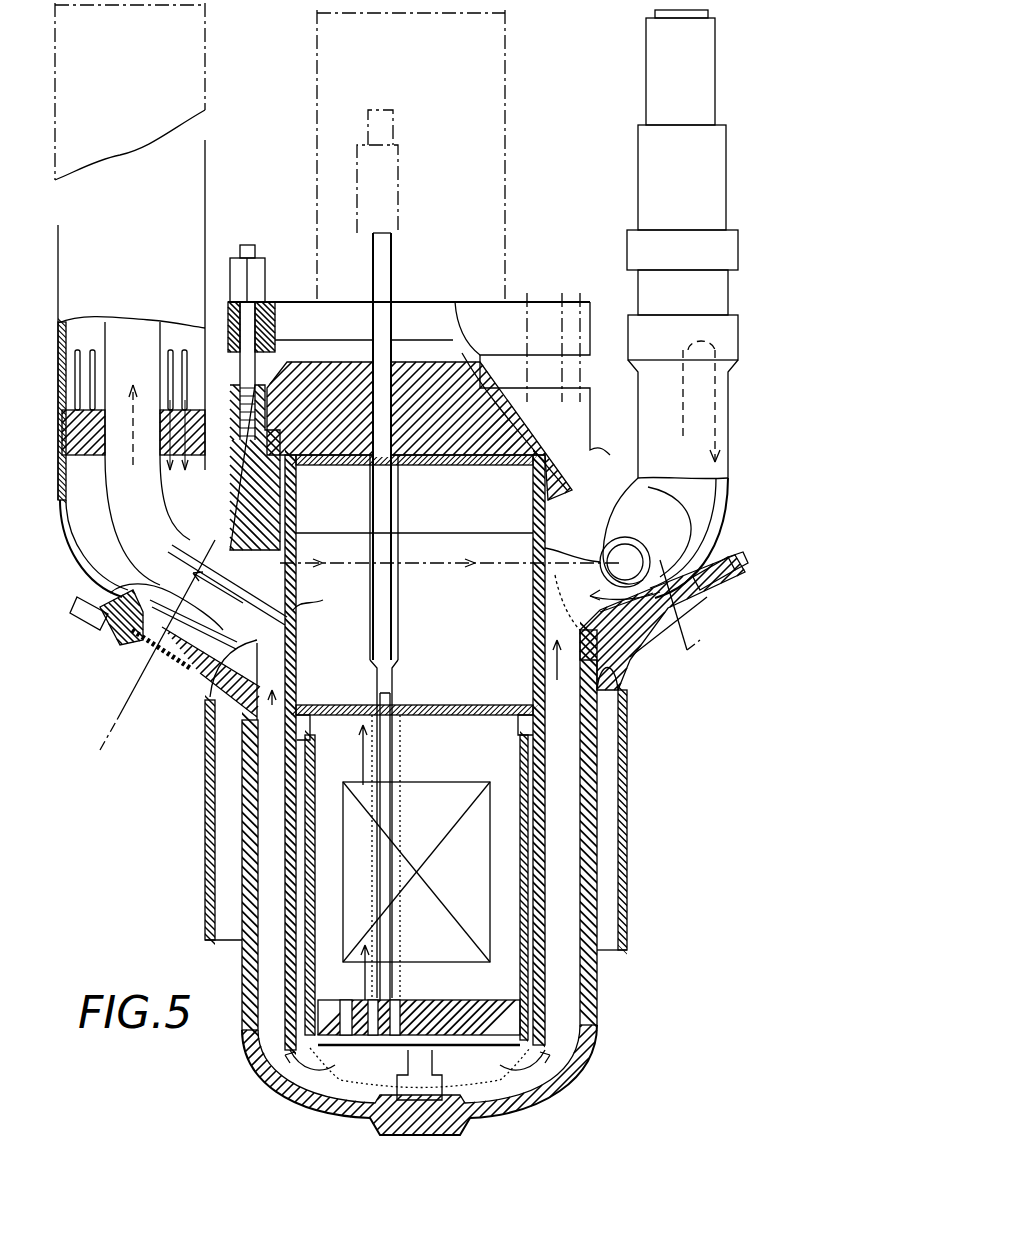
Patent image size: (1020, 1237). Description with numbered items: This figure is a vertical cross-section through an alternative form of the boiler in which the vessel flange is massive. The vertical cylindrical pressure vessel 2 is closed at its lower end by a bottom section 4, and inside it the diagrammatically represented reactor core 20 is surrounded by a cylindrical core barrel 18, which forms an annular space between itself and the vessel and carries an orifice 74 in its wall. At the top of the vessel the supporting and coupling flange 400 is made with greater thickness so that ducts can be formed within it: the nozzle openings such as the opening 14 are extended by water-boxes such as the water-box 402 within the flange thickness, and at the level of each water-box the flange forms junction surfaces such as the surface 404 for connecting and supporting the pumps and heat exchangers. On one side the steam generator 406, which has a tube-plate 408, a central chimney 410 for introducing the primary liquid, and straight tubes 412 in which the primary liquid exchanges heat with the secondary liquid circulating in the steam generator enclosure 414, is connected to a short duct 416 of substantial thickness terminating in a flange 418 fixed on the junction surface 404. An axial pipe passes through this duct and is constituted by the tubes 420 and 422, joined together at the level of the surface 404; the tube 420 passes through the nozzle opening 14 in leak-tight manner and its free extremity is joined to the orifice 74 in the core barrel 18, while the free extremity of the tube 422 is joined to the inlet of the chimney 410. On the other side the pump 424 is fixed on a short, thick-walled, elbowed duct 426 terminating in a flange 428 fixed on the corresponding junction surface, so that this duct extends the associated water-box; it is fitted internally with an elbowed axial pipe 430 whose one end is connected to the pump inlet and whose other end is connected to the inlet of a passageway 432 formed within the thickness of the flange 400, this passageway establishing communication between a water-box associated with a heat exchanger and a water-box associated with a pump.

The pressure vessel 2 is at (590, 893).
The bottom section 4 is at (590, 1060).
The nozzle opening 14 is at (300, 650).
The core barrel 18 is at (298, 682).
The reactor core 20 is at (460, 780).
The orifice 74 is at (324, 606).
The supporting and coupling flange 400 is at (210, 697).
The water-box 402 is at (98, 618).
The junction surface 404 is at (287, 492).
The steam generator 406 is at (210, 72).
The tube-plate 408 is at (103, 440).
The central chimney 410 is at (157, 333).
The straight tubes 412 is at (108, 340).
The steam generator enclosure 414 is at (78, 320).
The short duct 416 is at (72, 527).
The flange 418 is at (147, 637).
The tube 420 is at (280, 587).
The tube 422 is at (282, 514).
The pump 424 is at (645, 97).
The elbowed duct 426 is at (702, 440).
The flange 428 is at (735, 630).
The elbowed axial pipe 430 is at (670, 497).
The passageway 432 is at (543, 548).